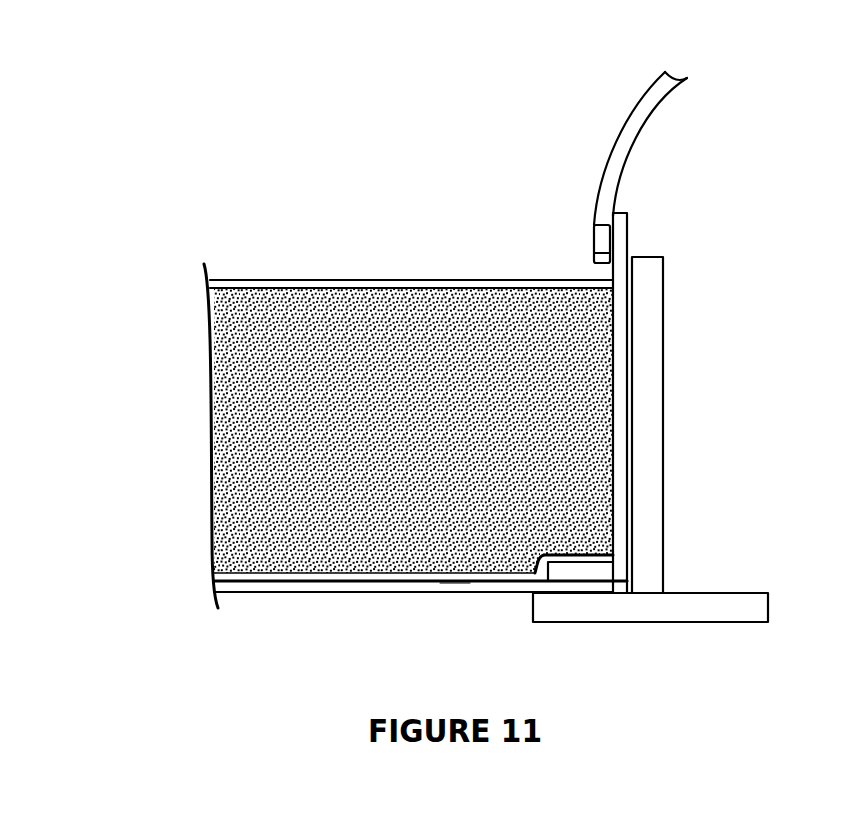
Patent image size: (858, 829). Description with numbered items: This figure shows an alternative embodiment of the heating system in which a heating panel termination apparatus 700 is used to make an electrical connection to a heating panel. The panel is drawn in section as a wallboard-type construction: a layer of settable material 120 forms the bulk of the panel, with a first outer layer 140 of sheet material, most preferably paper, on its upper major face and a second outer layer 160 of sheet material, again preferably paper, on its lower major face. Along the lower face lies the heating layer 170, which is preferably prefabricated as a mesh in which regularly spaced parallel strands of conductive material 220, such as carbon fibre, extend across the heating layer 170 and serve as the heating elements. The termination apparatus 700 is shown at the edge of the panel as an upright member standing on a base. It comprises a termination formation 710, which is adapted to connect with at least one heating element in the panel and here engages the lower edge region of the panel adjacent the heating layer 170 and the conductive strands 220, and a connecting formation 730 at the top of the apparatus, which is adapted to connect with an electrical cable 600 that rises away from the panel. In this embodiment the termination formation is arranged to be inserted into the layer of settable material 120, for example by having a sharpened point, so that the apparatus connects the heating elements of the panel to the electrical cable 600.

The layer of settable material 120 is at (270, 423).
The first outer layer 140 is at (363, 280).
The second outer layer 160 is at (327, 591).
The heating layer 170 is at (210, 577).
The strands of conductive material 220 is at (452, 590).
The electrical cable 600 is at (653, 102).
The heating panel termination apparatus 700 is at (635, 242).
The termination formation 710 is at (582, 568).
The connecting formation 730 is at (592, 238).